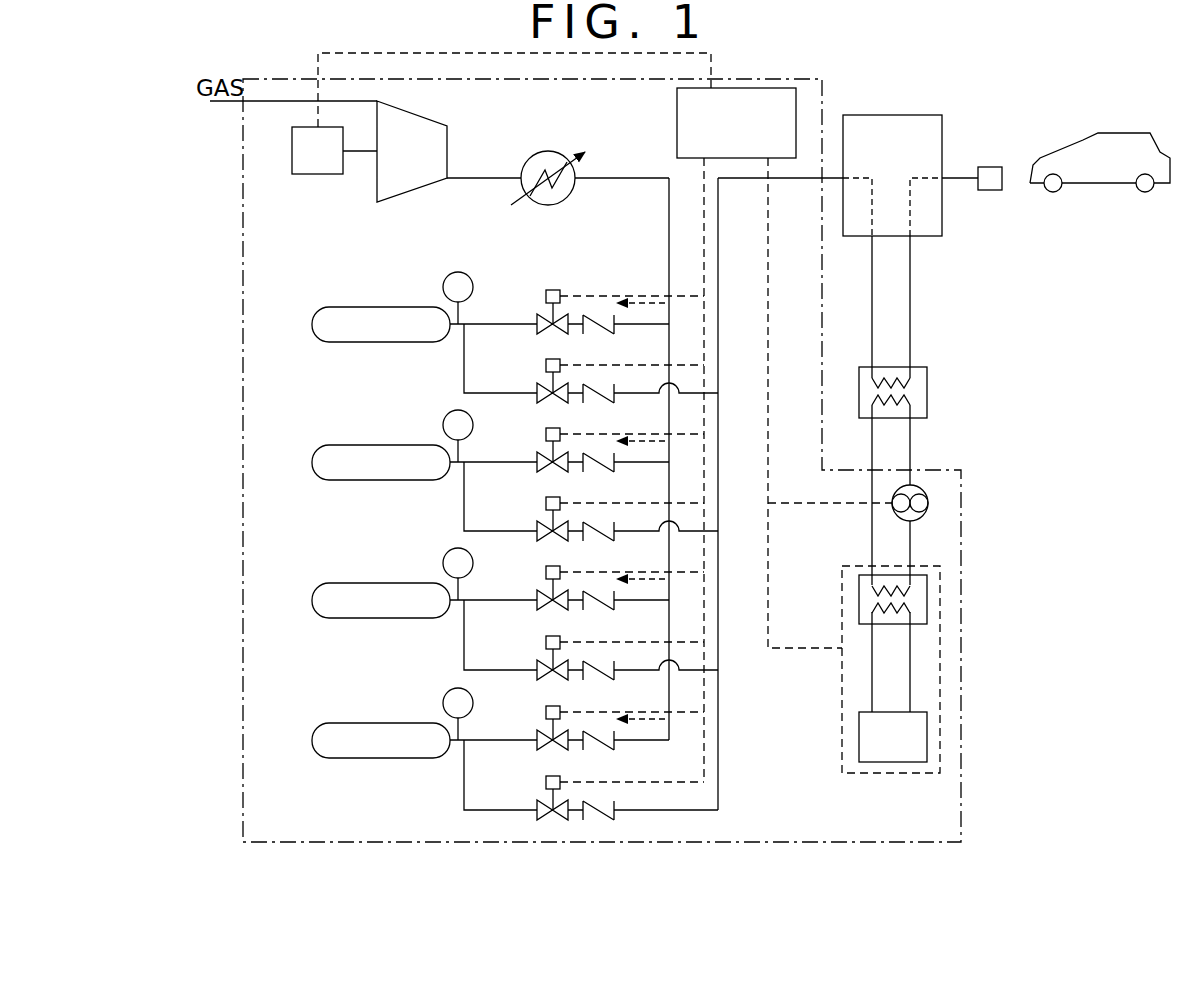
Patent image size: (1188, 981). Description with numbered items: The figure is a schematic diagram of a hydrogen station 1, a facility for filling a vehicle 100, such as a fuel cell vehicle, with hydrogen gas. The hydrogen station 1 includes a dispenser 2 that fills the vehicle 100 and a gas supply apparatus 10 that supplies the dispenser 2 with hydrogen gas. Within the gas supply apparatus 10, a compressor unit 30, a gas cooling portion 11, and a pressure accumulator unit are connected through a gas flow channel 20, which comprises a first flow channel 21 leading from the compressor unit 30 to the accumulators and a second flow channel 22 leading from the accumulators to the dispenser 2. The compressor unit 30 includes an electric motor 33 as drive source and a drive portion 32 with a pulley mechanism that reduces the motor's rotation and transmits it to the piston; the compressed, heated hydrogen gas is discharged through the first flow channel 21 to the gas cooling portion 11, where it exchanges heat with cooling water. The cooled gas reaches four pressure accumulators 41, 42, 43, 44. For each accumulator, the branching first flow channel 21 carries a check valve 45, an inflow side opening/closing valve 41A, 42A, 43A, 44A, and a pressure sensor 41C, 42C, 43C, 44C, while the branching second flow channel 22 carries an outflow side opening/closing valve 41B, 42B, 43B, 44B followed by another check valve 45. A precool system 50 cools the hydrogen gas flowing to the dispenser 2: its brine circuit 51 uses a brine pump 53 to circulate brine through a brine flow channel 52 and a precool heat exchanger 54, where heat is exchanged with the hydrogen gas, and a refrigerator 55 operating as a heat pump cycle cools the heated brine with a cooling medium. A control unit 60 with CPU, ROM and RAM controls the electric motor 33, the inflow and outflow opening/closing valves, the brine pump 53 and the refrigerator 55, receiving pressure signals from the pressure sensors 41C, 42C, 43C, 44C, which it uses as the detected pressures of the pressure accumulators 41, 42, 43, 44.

The hydrogen station 1 is at (1058, 76).
The dispenser 2 is at (953, 131).
The gas supply apparatus 10 is at (243, 413).
The gas cooling portion 11 is at (531, 158).
The gas flow channel 20 is at (617, 181).
The first flow channel 21 is at (669, 265).
The second flow channel 22 is at (718, 264).
The compressor unit 30 is at (351, 198).
The drive portion 32 is at (357, 177).
The electric motor 33 is at (313, 175).
The pressure accumulator 41 is at (312, 324).
The pressure accumulator 42 is at (312, 462).
The pressure accumulator 43 is at (312, 600).
The pressure accumulator 44 is at (312, 740).
The inflow side opening/closing valve 41A is at (540, 319).
The outflow side opening/closing valve 41B is at (540, 388).
The pressure sensor 41C is at (443, 288).
The inflow side opening/closing valve 42A is at (540, 457).
The outflow side opening/closing valve 42B is at (540, 526).
The pressure sensor 42C is at (443, 426).
The inflow side opening/closing valve 43A is at (540, 595).
The outflow side opening/closing valve 43B is at (540, 665).
The pressure sensor 43C is at (443, 564).
The inflow side opening/closing valve 44A is at (540, 735).
The outflow side opening/closing valve 44B is at (540, 805).
The pressure sensor 44C is at (443, 704).
The check valve 45 is at (612, 328).
The precool system 50 is at (1014, 468).
The brine circuit 51 is at (922, 459).
The brine flow channel 52 is at (830, 479).
The brine pump 53 is at (928, 503).
The precool heat exchanger 54 is at (928, 393).
The refrigerator 55 is at (940, 680).
The control unit 60 is at (677, 121).
The vehicle 100 is at (1125, 132).